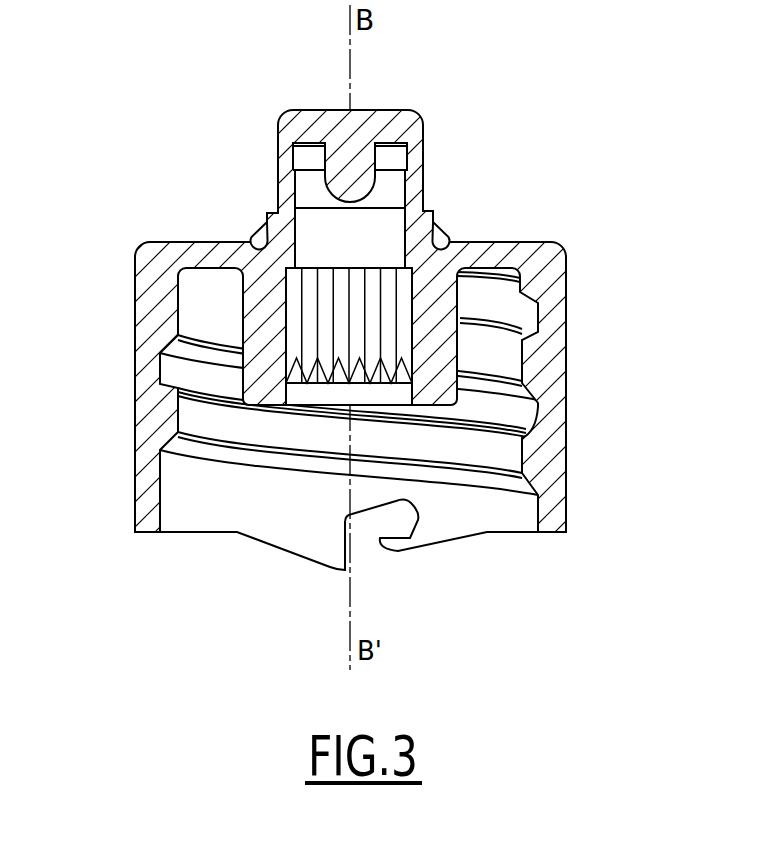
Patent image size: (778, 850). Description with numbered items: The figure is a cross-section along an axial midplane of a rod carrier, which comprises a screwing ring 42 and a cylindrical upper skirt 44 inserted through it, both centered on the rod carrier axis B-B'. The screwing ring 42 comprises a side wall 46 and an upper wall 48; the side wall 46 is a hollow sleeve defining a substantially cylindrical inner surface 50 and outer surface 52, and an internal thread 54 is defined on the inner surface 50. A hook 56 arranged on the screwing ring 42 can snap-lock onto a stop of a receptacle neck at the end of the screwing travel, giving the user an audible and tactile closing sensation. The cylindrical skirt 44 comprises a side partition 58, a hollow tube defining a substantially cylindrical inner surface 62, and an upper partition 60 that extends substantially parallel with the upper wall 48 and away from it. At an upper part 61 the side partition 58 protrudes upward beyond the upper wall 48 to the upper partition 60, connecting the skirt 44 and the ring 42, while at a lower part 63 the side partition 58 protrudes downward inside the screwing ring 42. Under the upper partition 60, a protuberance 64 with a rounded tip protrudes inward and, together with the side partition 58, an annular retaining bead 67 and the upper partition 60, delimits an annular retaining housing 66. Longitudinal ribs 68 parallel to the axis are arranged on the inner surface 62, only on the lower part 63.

The screwing ring 42 is at (568, 330).
The cylindrical upper skirt 44 is at (425, 182).
The side wall 46 is at (140, 417).
The upper wall 48 is at (183, 242).
The inner surface 50 is at (533, 413).
The outer surface 52 is at (568, 468).
The internal thread 54 is at (202, 453).
The hook 56 is at (399, 530).
The side partition 58 is at (412, 238).
The upper partition 60 is at (384, 110).
The upper part 61 is at (303, 227).
The inner surface 62 is at (441, 237).
The lower part 63 is at (295, 310).
The protuberance 64 is at (424, 137).
The retaining housing 66 is at (310, 138).
The annular retaining bead 67 is at (278, 187).
The longitudinal ribs 68 is at (386, 318).